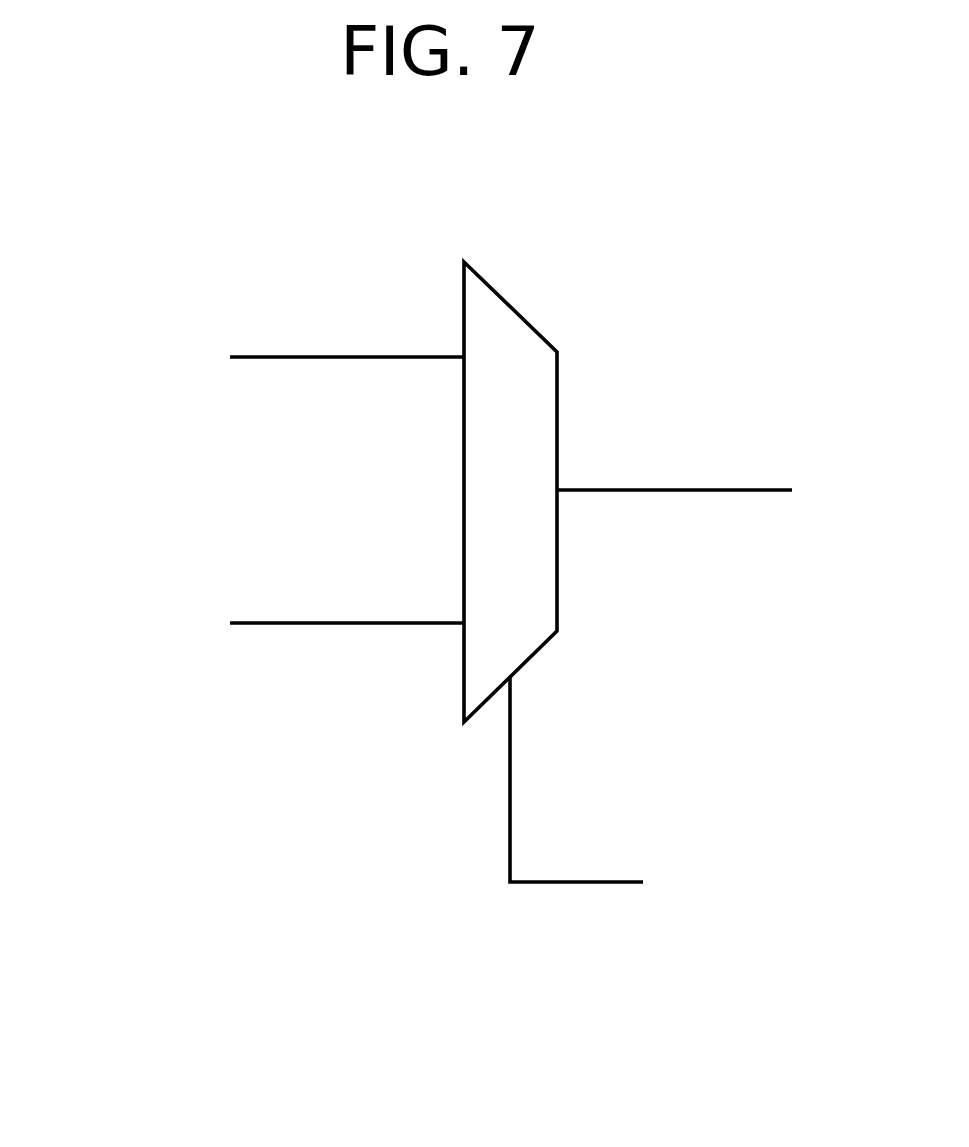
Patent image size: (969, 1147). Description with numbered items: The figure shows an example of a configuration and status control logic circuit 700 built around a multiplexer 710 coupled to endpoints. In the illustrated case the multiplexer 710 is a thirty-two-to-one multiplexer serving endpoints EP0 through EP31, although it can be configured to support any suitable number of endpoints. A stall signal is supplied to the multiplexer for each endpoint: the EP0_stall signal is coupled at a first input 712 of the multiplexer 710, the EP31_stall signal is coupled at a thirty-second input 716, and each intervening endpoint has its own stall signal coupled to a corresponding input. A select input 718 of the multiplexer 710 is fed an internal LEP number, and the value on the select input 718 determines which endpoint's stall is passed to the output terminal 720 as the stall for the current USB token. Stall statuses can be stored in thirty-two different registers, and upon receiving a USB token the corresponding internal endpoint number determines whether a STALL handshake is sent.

The configuration and status control logic circuit 700 is at (207, 192).
The multiplexer 710 is at (507, 300).
The first input 712 is at (252, 360).
The 32nd input 716 is at (252, 626).
The select input 718 is at (615, 877).
The output terminal 720 is at (753, 490).